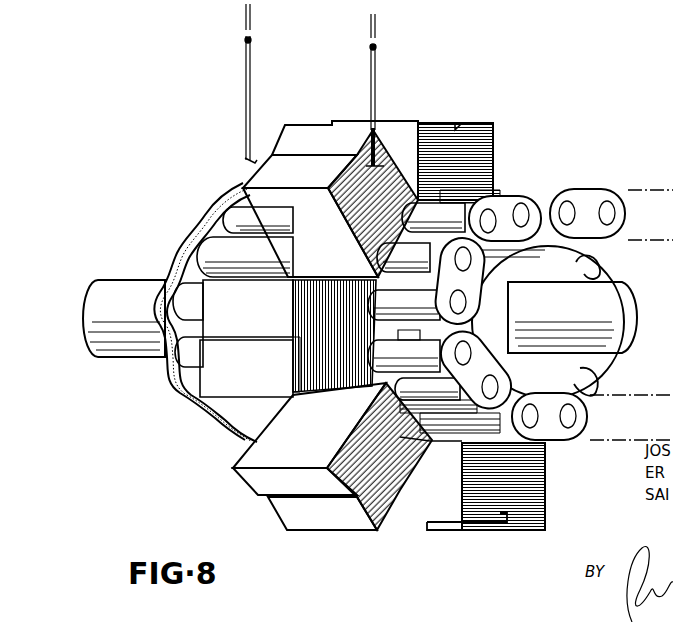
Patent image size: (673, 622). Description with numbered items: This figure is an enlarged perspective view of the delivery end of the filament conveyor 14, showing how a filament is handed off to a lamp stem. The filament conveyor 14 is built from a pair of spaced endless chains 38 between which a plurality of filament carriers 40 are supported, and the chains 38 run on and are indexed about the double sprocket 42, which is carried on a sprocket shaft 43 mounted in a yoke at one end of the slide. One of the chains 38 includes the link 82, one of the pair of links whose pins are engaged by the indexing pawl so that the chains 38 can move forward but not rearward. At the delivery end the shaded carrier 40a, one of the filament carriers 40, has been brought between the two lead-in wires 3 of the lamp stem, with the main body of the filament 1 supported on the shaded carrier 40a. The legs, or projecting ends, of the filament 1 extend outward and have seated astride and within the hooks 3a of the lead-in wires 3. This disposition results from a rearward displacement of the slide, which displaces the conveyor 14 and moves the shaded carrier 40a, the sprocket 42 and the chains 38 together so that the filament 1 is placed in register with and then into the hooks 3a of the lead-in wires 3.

The filament 1 is at (386, 170).
The lead-in wires 3 is at (246, 86).
The hooks 3a is at (253, 162).
The filament conveyor 14 is at (501, 128).
The endless chains 38 is at (582, 184).
The filament carriers 40 is at (455, 126).
The shaded carrier 40a is at (320, 131).
The double sprocket 42 is at (586, 272).
The sprocket shaft 43 is at (137, 292).
The link 82 is at (176, 275).